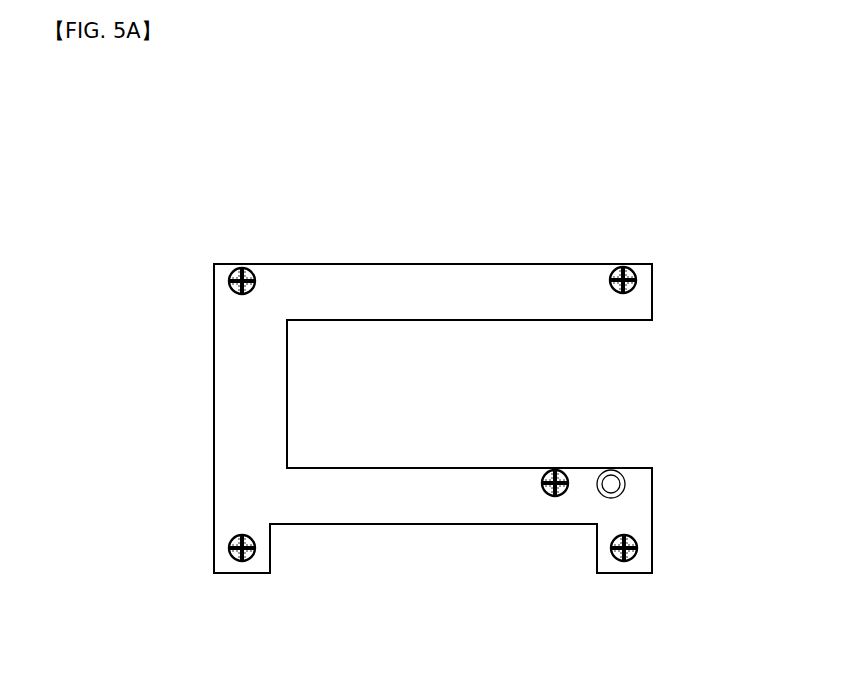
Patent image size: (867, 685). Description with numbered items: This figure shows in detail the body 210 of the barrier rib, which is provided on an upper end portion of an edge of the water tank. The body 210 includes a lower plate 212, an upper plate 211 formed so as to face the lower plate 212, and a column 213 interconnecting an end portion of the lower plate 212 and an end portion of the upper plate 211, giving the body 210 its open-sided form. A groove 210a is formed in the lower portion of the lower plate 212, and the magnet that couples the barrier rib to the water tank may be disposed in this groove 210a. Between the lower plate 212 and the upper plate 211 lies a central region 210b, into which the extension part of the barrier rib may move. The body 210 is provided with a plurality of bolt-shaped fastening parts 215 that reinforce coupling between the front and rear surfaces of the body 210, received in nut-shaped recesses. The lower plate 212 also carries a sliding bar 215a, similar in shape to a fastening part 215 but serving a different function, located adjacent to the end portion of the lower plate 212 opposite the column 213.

The body 210 is at (658, 216).
The groove 210a is at (362, 540).
The central region 210b is at (447, 402).
The upper plate 211 is at (392, 287).
The lower plate 212 is at (312, 497).
The column 213 is at (229, 342).
The fastening parts 215 is at (624, 535).
The sliding bar 215a is at (554, 496).